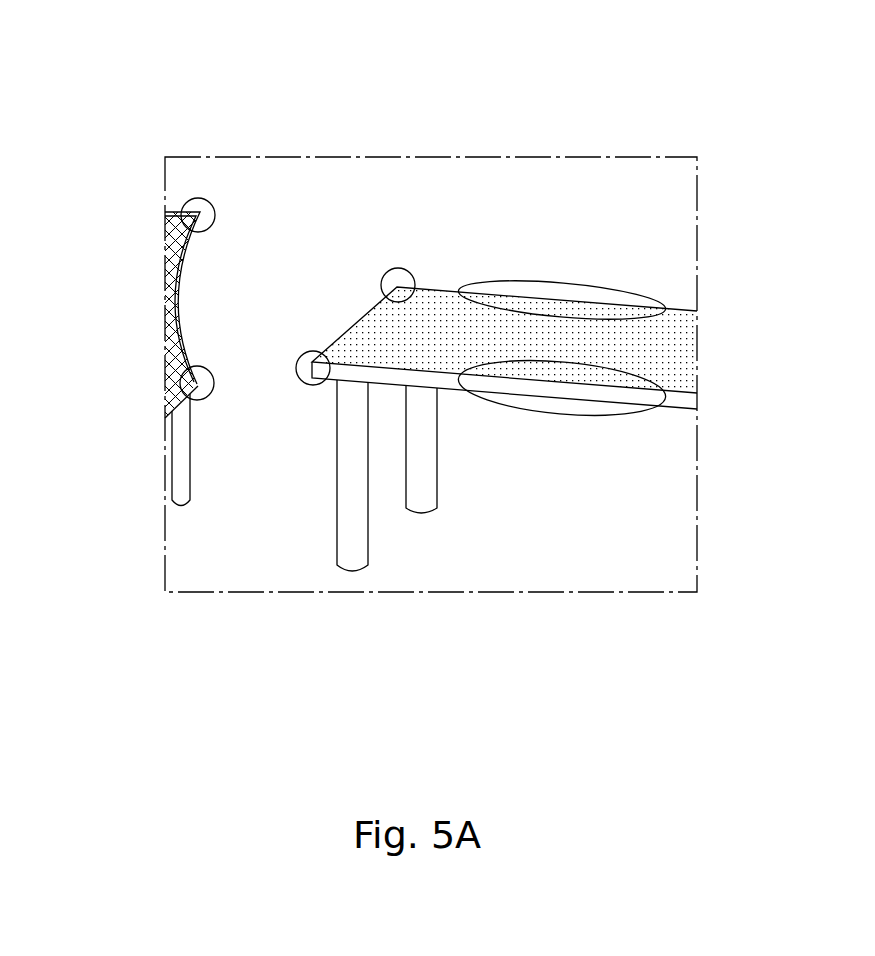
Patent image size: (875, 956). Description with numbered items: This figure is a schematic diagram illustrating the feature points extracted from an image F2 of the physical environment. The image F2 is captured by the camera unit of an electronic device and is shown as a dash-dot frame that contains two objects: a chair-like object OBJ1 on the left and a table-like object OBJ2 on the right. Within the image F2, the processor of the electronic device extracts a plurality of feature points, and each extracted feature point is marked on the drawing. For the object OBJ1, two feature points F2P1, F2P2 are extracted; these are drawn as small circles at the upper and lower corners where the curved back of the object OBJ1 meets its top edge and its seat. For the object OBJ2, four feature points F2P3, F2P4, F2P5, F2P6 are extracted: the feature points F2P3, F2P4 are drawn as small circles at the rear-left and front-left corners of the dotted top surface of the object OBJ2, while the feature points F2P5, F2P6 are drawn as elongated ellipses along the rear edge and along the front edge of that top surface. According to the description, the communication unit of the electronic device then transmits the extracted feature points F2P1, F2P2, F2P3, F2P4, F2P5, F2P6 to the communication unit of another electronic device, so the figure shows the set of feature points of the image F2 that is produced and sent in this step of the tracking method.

The image F2 is at (156, 40).
The object OBJ1 is at (178, 253).
The object OBJ2 is at (680, 335).
The feature point F2P1 is at (212, 200).
The feature point F2P2 is at (208, 400).
The feature point F2P3 is at (397, 268).
The feature point F2P4 is at (305, 352).
The feature point F2P5 is at (571, 283).
The feature point F2P6 is at (553, 414).